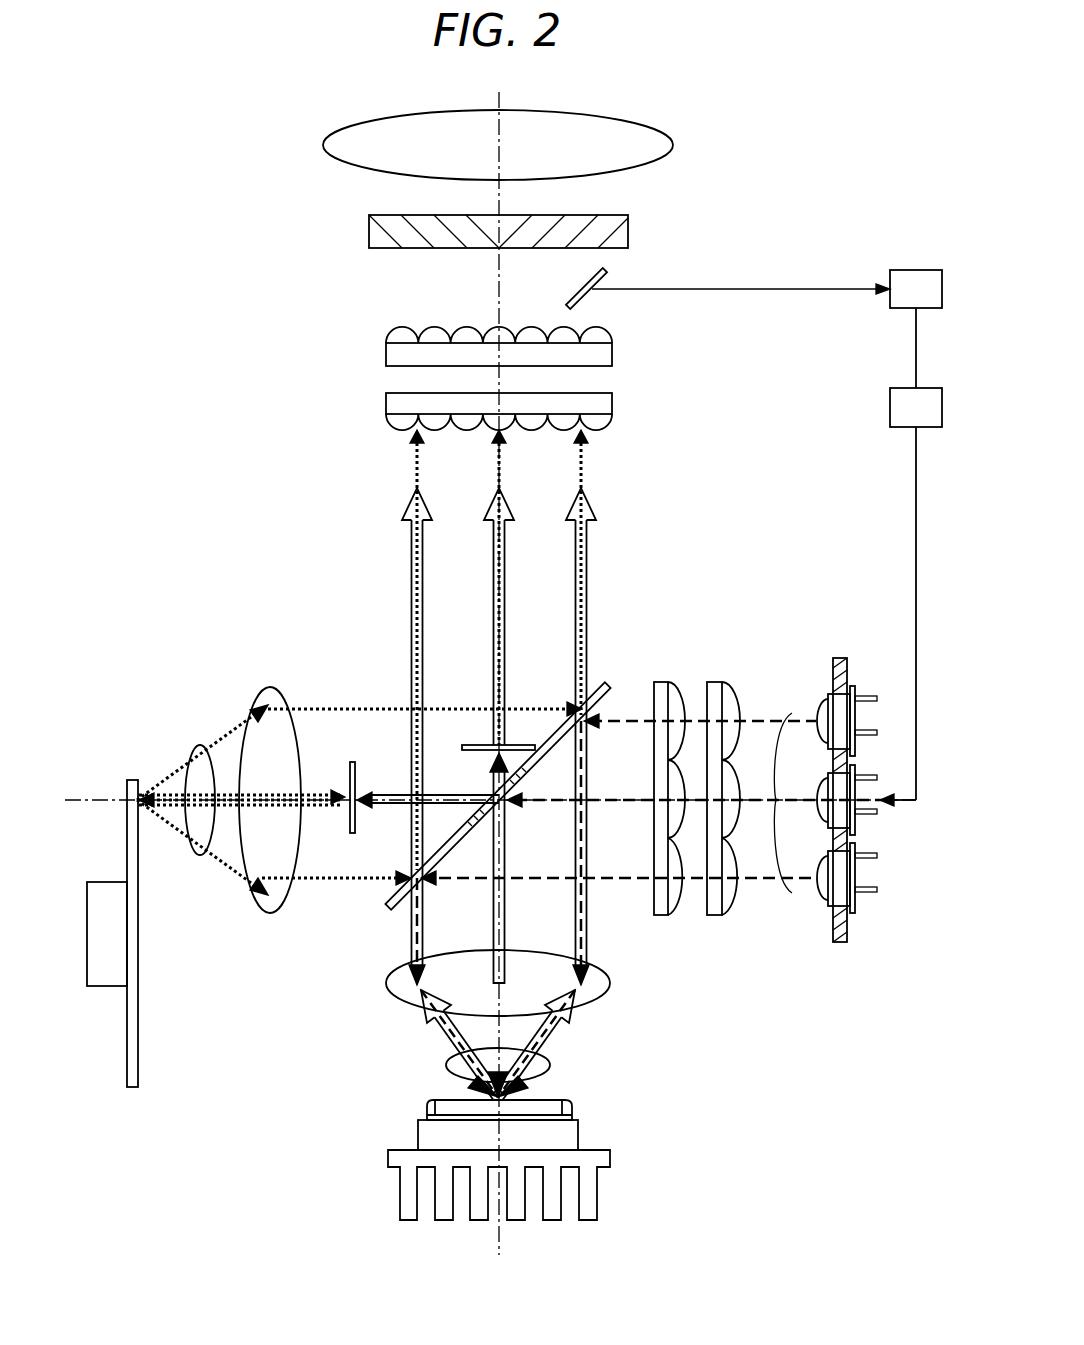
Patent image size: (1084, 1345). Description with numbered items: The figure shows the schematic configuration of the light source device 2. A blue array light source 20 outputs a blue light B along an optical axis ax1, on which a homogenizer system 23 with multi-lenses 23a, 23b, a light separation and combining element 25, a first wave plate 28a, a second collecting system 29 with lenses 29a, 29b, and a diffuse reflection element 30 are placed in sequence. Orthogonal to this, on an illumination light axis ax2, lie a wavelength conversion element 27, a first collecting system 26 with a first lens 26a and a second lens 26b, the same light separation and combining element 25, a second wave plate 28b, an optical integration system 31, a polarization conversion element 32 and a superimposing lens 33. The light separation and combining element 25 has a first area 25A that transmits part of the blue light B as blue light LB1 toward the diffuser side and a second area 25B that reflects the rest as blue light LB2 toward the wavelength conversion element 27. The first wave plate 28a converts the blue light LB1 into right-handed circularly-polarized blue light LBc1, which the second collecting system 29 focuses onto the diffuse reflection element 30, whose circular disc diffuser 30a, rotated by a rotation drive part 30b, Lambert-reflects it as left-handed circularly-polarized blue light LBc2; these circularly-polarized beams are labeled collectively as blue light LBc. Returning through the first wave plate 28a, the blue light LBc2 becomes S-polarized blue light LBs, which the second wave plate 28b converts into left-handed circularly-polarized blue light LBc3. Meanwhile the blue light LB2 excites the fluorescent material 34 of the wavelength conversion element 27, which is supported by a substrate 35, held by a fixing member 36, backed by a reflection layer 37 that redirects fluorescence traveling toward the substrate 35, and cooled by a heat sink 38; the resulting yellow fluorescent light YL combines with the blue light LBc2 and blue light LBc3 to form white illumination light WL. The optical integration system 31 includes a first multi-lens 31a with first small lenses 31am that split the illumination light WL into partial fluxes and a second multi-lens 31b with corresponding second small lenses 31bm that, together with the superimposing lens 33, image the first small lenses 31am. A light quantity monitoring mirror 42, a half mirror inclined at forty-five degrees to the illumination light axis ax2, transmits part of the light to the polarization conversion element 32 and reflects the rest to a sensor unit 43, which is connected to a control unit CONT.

The light source device 2 is at (842, 108).
The blue array light source 20 is at (862, 668).
The homogenizer system 23 is at (713, 724).
The multi-lens 23a is at (732, 700).
The multi-lens 23b is at (676, 700).
The light separation and combining element 25 is at (633, 783).
The first area 25A is at (510, 805).
The second area 25B is at (560, 738).
The first collecting system 26 is at (586, 1016).
The first lens 26a is at (600, 996).
The second lens 26b is at (545, 1073).
The wavelength conversion element 27 is at (612, 1210).
The first wave plate 28a is at (352, 770).
The second wave plate 28b is at (470, 745).
The second collecting system 29 is at (226, 759).
The lens 29a is at (262, 700).
The lens 29b is at (183, 752).
The diffuse reflection element 30 is at (143, 983).
The diffuser 30a is at (130, 1090).
The rotation drive part 30b is at (97, 975).
The optical integration system 31 is at (527, 364).
The first multi-lens 31a is at (500, 402).
The first small lenses 31am is at (400, 421).
The second multi-lens 31b is at (501, 333).
The second small lenses 31bm is at (400, 331).
The polarization conversion element 32 is at (628, 221).
The superimposing lens 33 is at (630, 131).
The fluorescent material 34 is at (462, 1107).
The substrate 35 is at (565, 1138).
The fixing member 36 is at (572, 1116).
The reflection layer 37 is at (448, 1116).
The heat sink 38 is at (390, 1158).
The light quantity monitoring mirror 42 is at (605, 277).
The sensor unit 43 is at (910, 270).
The control unit CONT is at (906, 388).
The blue light B is at (778, 730).
The white illumination light WL is at (492, 707).
The fluorescent light YL is at (493, 610).
The blue light (diffusely reflected, circularly-polarized) LBc is at (335, 823).
The blue light LBc1 is at (228, 845).
The blue light LBc2 is at (575, 572).
The blue light LBc3 is at (493, 550).
The blue light LBs is at (495, 778).
The blue light LB1 is at (392, 800).
The blue light LB2 is at (560, 1027).
The optical axis ax1 is at (72, 806).
The illumination light axis ax2 is at (502, 1250).